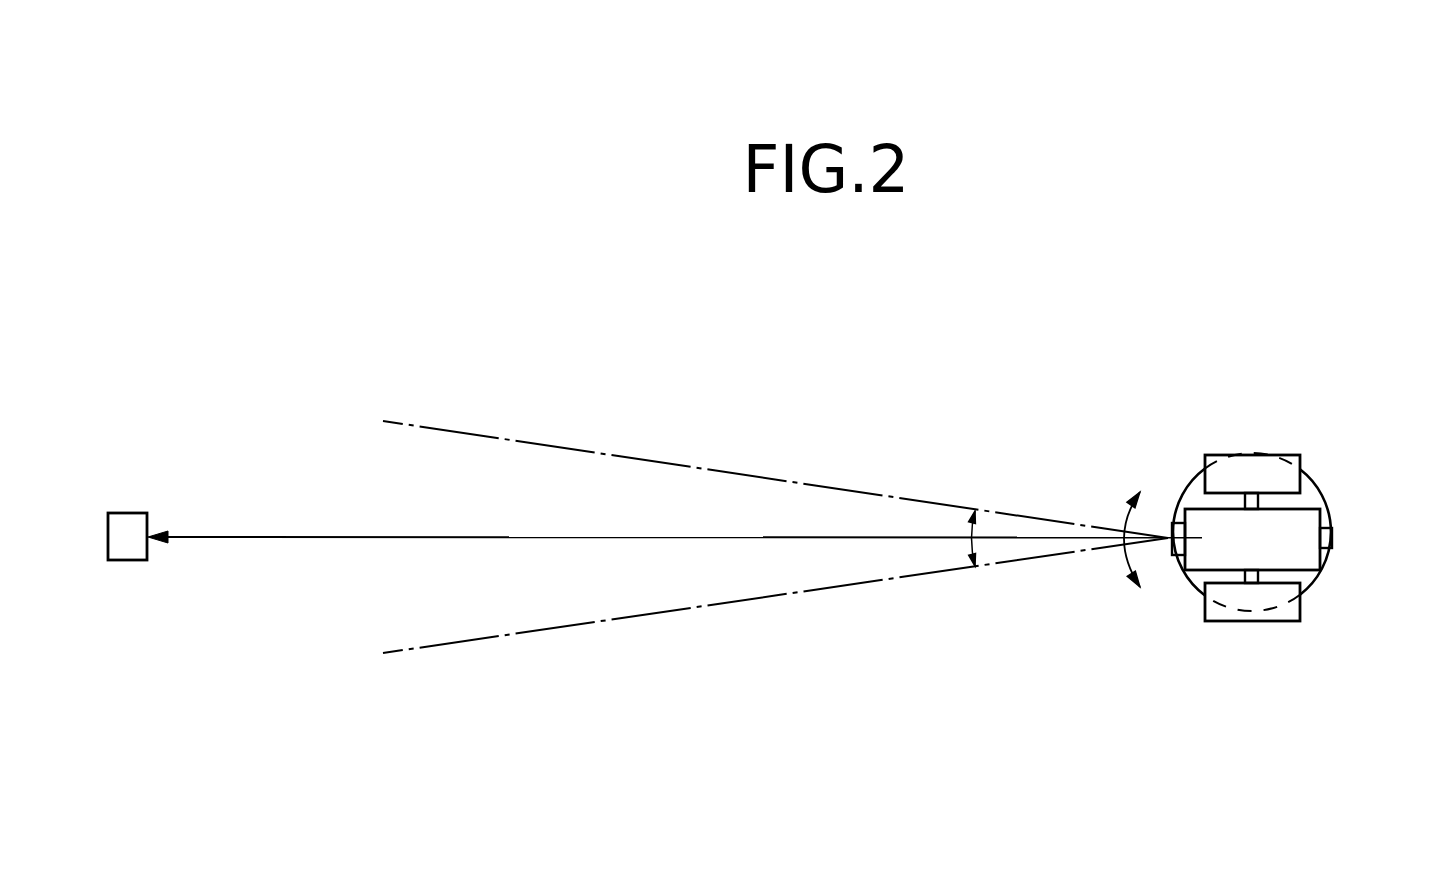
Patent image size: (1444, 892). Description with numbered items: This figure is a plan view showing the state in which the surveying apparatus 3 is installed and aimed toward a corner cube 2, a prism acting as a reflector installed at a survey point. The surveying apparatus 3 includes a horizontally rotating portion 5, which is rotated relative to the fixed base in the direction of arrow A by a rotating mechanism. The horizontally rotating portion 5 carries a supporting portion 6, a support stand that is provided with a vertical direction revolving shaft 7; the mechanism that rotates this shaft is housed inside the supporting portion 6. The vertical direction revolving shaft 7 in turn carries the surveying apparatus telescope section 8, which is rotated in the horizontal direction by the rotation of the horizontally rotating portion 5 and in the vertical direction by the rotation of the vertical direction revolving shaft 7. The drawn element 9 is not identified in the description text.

The corner cube 2 is at (126, 517).
The surveying apparatus 3 is at (1216, 454).
The horizontally rotating portion 5 is at (1333, 506).
The supporting portion 6 is at (1257, 466).
The vertical direction revolving shaft 7 is at (1260, 502).
The surveying apparatus telescope section 8 is at (1307, 562).
The distance sensor 9 is at (1176, 556).
The arrow A is at (1111, 549).